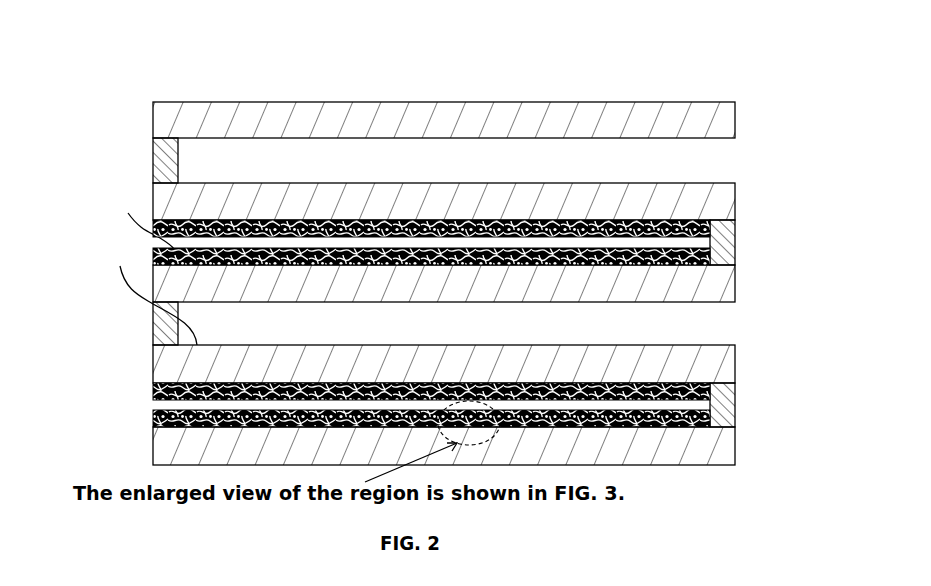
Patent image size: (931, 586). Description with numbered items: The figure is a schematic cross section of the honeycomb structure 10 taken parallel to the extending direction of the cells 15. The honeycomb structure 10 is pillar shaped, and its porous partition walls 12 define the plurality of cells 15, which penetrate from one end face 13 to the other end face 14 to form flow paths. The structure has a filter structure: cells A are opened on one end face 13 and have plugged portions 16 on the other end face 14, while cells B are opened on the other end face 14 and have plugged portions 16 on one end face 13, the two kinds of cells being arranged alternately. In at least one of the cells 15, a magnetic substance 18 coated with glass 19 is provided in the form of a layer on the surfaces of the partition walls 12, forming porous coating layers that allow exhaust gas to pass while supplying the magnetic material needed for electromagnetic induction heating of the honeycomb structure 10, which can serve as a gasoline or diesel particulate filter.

The honeycomb structure 10 is at (437, 80).
The partition walls 12 is at (693, 108).
The one end face 13 is at (153, 450).
The other end face 14 is at (735, 445).
The cells 15 is at (58, 197).
The plugged portions 16 is at (153, 159).
The magnetic substance 18 is at (517, 220).
The glass 19 is at (596, 220).